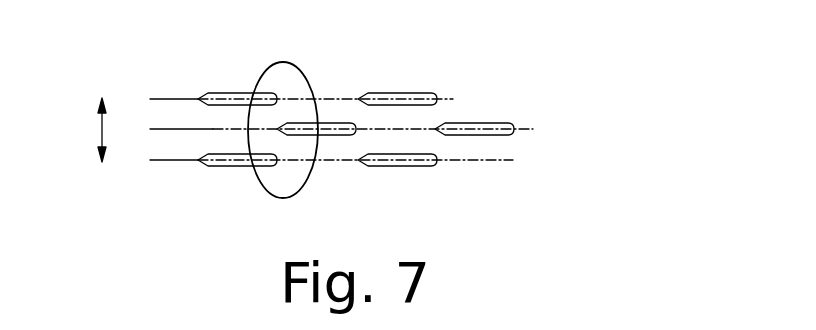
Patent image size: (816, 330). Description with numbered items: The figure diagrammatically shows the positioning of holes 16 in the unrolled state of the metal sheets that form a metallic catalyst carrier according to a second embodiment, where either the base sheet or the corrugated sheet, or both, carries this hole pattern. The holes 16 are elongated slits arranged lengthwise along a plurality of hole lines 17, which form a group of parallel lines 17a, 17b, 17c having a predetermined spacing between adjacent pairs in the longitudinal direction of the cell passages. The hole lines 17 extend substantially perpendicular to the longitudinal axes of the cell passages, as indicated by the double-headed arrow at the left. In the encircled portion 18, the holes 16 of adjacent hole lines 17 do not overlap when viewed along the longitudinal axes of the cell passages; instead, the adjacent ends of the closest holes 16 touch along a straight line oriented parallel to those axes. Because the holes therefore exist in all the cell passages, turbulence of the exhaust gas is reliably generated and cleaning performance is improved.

The holes 16 is at (482, 134).
The hole lines 17 is at (440, 123).
The first hole line 17a is at (488, 155).
The second hole line 17b is at (516, 130).
The third hole line 17c is at (440, 96).
The encircled portion 18 is at (322, 76).